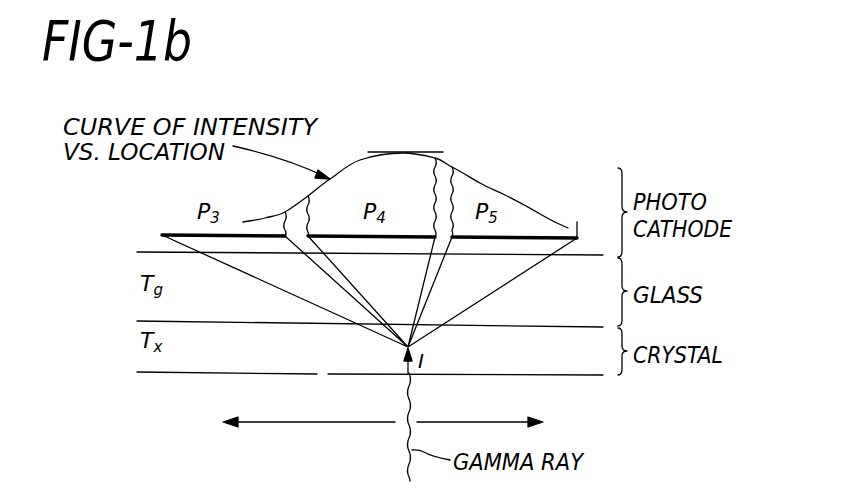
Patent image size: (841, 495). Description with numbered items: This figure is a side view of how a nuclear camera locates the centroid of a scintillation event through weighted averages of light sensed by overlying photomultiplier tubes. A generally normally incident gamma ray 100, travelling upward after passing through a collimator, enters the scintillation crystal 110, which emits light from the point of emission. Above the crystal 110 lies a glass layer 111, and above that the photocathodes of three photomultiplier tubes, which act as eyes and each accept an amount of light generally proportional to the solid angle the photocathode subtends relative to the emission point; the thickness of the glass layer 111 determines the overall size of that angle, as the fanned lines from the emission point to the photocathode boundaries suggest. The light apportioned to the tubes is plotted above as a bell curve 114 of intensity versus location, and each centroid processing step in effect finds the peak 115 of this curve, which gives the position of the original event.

The gamma ray 100 is at (407, 437).
The scintillation crystal 110 is at (577, 365).
The glass layer 111 is at (577, 307).
The bell curve of intensity versus location 114 is at (505, 194).
The peak of bell curve 115 is at (430, 152).